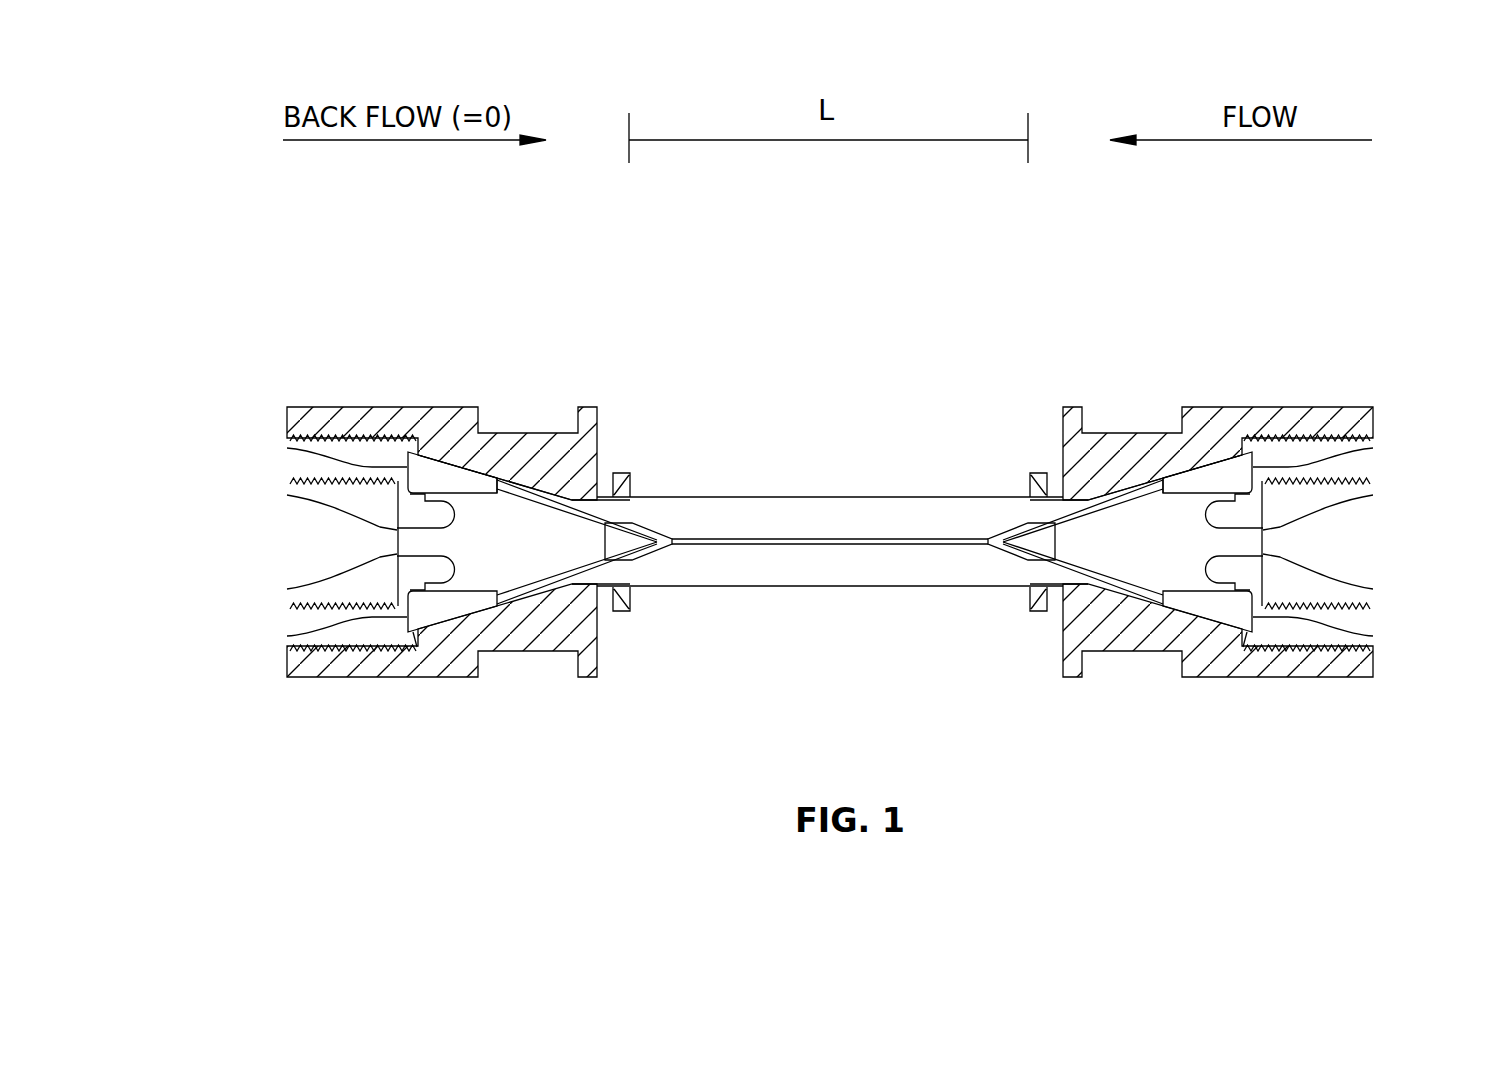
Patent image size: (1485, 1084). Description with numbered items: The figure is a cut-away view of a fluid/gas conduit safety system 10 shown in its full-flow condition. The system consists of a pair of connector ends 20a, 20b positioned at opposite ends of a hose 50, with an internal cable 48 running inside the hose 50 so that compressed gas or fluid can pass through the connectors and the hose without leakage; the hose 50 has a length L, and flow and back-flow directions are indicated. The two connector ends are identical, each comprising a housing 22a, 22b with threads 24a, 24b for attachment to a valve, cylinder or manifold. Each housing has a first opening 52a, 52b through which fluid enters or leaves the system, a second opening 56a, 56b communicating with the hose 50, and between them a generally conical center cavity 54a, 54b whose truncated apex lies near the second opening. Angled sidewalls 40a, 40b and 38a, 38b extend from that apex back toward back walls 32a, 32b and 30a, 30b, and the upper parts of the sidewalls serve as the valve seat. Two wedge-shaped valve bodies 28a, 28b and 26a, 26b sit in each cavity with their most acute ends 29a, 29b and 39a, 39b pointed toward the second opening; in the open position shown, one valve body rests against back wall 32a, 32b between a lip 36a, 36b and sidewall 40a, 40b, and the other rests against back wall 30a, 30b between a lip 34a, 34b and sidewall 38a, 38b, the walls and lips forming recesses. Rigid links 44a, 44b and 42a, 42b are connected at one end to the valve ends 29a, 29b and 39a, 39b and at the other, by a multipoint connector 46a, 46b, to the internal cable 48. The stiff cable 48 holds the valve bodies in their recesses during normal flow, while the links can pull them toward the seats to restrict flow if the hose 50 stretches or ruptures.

The fluid/gas conduit safety system 10 is at (250, 316).
The connector end 20a is at (1373, 679).
The connector end 20b is at (290, 679).
The housing 22a is at (1327, 678).
The housing 22b is at (333, 678).
The threads 24a is at (1360, 609).
The threads 24b is at (298, 610).
The wedge shaped valve body 26a is at (1254, 655).
The wedge shaped valve body 26b is at (406, 655).
The wedge shaped valve body 28a is at (1212, 460).
The wedge shaped valve body 28b is at (448, 460).
The valve end 29a is at (1164, 484).
The valve end 29b is at (496, 484).
The back wall 30a is at (1249, 641).
The back wall 30b is at (411, 641).
The back wall 32a is at (1373, 448).
The back wall 32b is at (288, 448).
The lip 34a is at (1362, 592).
The lip 34b is at (300, 592).
The lip 36a is at (1373, 496).
The lip 36b is at (288, 496).
The angled sidewall 38a is at (1207, 620).
The angled sidewall 38b is at (453, 620).
The valve end 39a is at (1158, 612).
The valve end 39b is at (502, 612).
The angled sidewall 40a is at (1230, 445).
The angled sidewall 40b is at (430, 438).
The link 42a is at (1046, 614).
The link 42b is at (612, 614).
The link 44a is at (1052, 476).
The link 44b is at (608, 476).
The multipoint connector 46a is at (1000, 588).
The multipoint connector 46b is at (655, 588).
The internal cable 48 is at (828, 545).
The hose 50 is at (828, 497).
The first opening 52a is at (1373, 541).
The first opening 52b is at (288, 541).
The center cavity 54a is at (1142, 540).
The center cavity 54b is at (518, 540).
The second opening 56a is at (1015, 523).
The second opening 56b is at (645, 523).